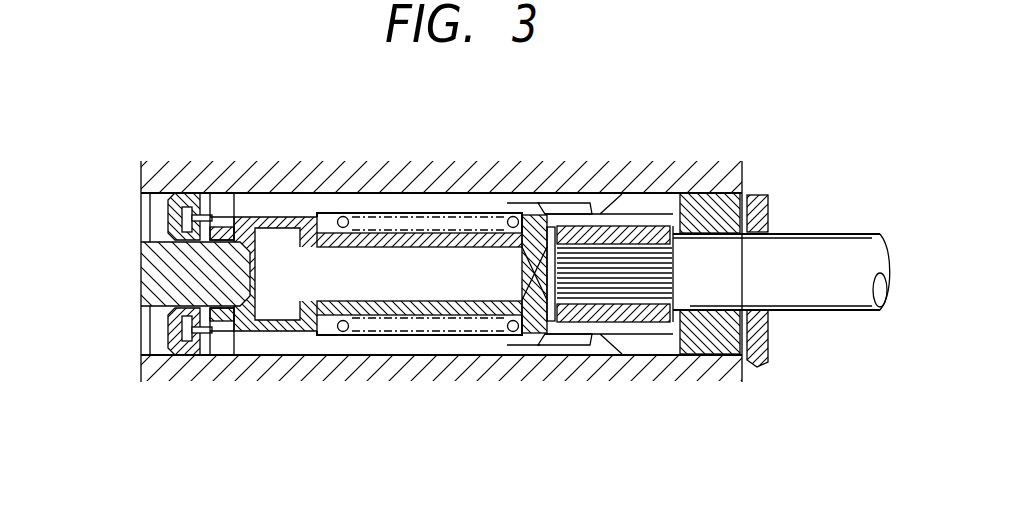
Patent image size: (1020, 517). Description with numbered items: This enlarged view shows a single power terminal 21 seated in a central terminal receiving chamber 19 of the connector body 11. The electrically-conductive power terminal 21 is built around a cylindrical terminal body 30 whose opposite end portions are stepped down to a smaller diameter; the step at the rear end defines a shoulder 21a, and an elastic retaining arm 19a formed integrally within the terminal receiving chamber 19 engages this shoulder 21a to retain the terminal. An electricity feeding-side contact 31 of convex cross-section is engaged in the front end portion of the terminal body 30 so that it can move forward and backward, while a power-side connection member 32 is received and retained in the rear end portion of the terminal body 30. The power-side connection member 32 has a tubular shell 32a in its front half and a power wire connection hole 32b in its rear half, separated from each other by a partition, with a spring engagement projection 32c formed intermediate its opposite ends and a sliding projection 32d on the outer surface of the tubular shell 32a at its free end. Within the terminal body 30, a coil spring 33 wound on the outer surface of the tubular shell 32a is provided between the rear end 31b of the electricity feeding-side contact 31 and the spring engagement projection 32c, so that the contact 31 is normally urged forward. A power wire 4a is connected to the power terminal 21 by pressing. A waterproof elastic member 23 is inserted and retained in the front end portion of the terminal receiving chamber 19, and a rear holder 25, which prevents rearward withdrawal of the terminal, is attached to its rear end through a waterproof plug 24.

The connector body 11 is at (135, 177).
The terminal receiving chamber 19 is at (424, 346).
The elastic retaining arm 19a is at (556, 336).
The power terminal 21 is at (134, 275).
The shoulder 21a is at (541, 346).
The waterproof elastic member 23 is at (183, 355).
The waterproof plug 24 is at (710, 345).
The rear holder 25 is at (770, 212).
The terminal body 30 is at (270, 320).
The electricity feeding-side contact 31 is at (213, 236).
The rear end 31b is at (335, 218).
The power-side connection member 32 is at (533, 214).
The tubular shell 32a is at (426, 236).
The power wire connection hole 32b is at (642, 227).
The spring engagement projection 32c is at (530, 346).
The sliding projection 32d is at (330, 216).
The coil spring 33 is at (511, 216).
The power wire 4a is at (840, 311).